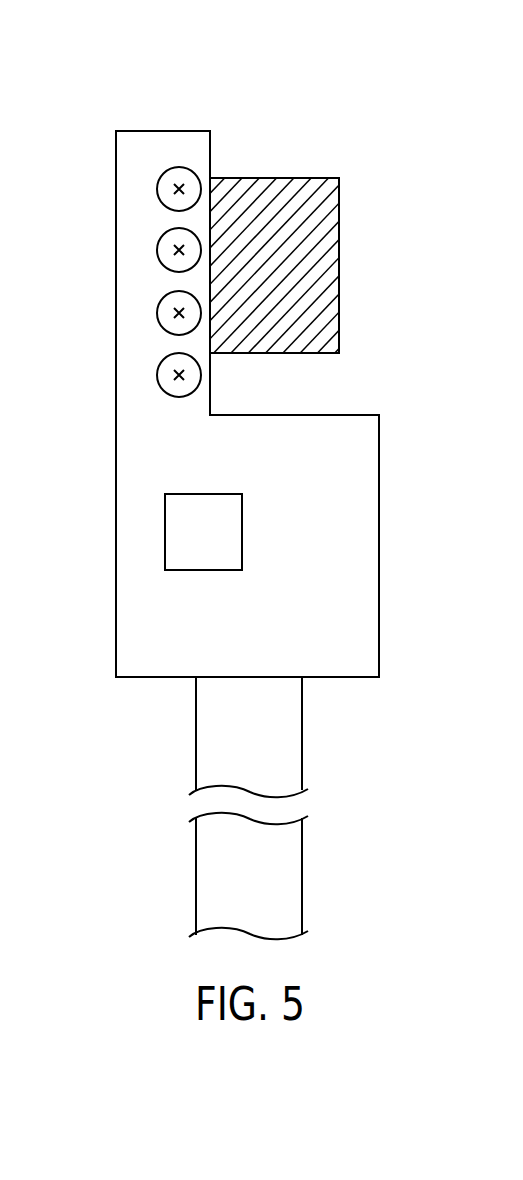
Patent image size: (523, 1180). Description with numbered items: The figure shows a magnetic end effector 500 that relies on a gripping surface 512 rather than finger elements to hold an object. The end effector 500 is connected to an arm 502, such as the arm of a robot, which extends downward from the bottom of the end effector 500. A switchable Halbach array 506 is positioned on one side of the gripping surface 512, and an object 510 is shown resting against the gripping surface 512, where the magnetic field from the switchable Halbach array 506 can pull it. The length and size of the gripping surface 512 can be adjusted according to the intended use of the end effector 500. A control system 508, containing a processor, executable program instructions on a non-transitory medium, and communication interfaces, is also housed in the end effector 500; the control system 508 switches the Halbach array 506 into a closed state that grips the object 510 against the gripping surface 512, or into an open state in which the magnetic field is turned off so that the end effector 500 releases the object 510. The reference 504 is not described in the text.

The magnetic end effector 500 is at (94, 87).
The arm 502 is at (302, 741).
The handle body 504 is at (381, 540).
The switchable Halbach array 506 is at (142, 250).
The control system 508 is at (177, 532).
The object 510 is at (340, 271).
The gripping surface 512 is at (226, 154).